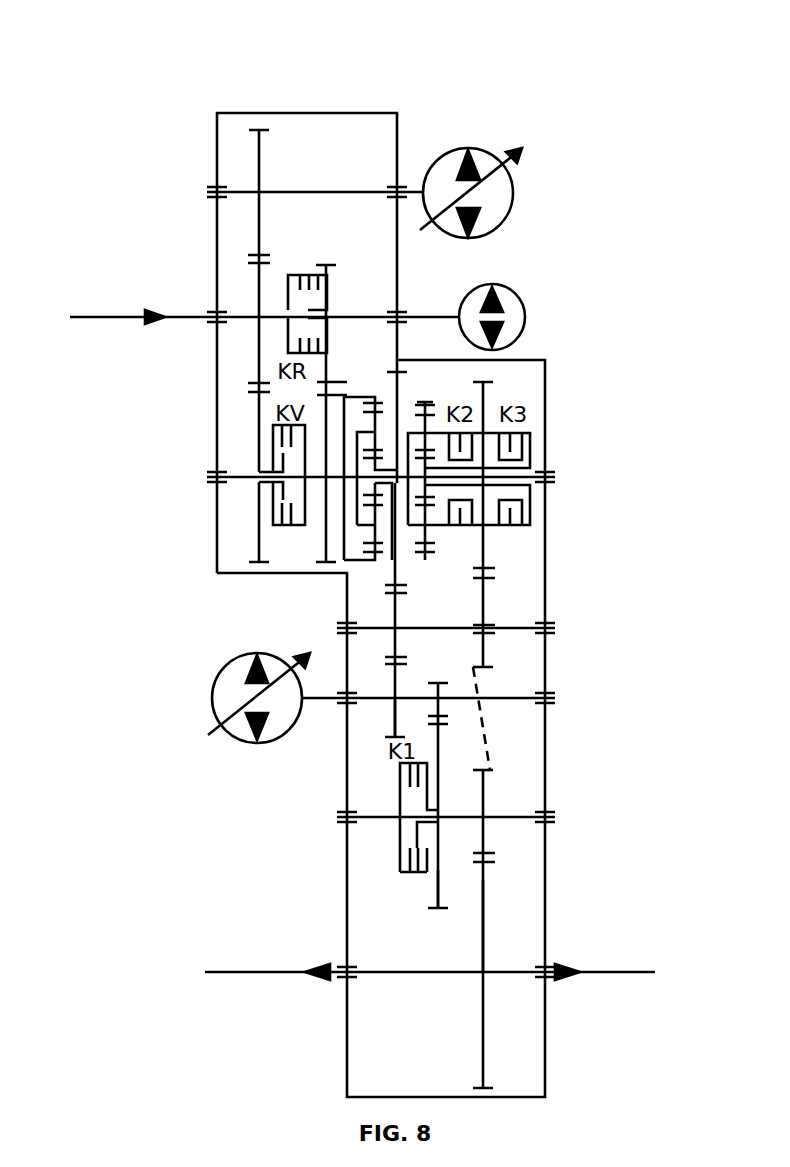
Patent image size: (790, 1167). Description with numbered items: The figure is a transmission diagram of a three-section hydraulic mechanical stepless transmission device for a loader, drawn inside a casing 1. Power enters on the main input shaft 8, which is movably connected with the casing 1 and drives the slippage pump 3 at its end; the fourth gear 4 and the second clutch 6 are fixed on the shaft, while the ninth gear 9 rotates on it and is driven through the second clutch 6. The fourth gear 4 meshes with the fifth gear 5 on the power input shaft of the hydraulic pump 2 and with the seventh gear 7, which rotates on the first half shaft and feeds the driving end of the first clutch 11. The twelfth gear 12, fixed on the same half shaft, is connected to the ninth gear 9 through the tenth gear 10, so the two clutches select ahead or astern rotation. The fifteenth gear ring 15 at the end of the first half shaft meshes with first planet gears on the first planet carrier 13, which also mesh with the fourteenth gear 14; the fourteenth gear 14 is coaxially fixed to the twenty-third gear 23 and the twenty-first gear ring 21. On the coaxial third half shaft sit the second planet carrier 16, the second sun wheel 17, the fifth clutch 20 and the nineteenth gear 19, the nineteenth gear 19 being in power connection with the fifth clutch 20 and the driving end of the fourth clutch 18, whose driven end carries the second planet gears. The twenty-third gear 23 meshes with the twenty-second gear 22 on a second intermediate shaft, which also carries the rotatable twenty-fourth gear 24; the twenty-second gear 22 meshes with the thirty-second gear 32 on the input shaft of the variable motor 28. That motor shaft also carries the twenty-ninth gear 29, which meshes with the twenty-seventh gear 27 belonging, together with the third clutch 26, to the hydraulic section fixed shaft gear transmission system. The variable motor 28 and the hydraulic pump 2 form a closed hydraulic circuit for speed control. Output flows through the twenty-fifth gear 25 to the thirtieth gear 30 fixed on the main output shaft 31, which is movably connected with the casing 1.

The casing 1 is at (272, 112).
The hydraulic pump 2 is at (513, 188).
The slippage pump 3 is at (512, 305).
The fourth gear 4 is at (253, 278).
The fifth gear 5 is at (259, 172).
The second clutch 6 is at (307, 282).
The seventh gear 7 is at (253, 417).
The main input shaft 8 is at (93, 316).
The ninth gear 9 is at (325, 265).
The tenth gear 10 is at (333, 377).
The first clutch 11 is at (273, 438).
The twelfth gear 12 is at (344, 527).
The first planet carrier 13 is at (370, 530).
The fourteenth gear 14 is at (378, 468).
The fifteenth gear ring 15 is at (373, 565).
The second planet carrier 16 is at (413, 430).
The second sun wheel 17 is at (437, 487).
The fourth clutch 18 is at (458, 440).
The nineteenth gear 19 is at (483, 382).
The fifth clutch 20 is at (507, 445).
The twenty-first gear ring 21 is at (430, 560).
The twenty-second gear 22 is at (397, 612).
The twenty-third gear 23 is at (400, 363).
The twenty-fourth gear 24 is at (472, 652).
The twenty-fifth gear 25 is at (483, 830).
The third clutch 26 is at (402, 855).
The twenty-seventh gear 27 is at (432, 883).
The variable motor 28 is at (214, 688).
The twenty-ninth gear 29 is at (440, 703).
The thirtieth gear 30 is at (483, 930).
The main output shaft 31 is at (493, 973).
The thirty-second gear 32 is at (393, 716).